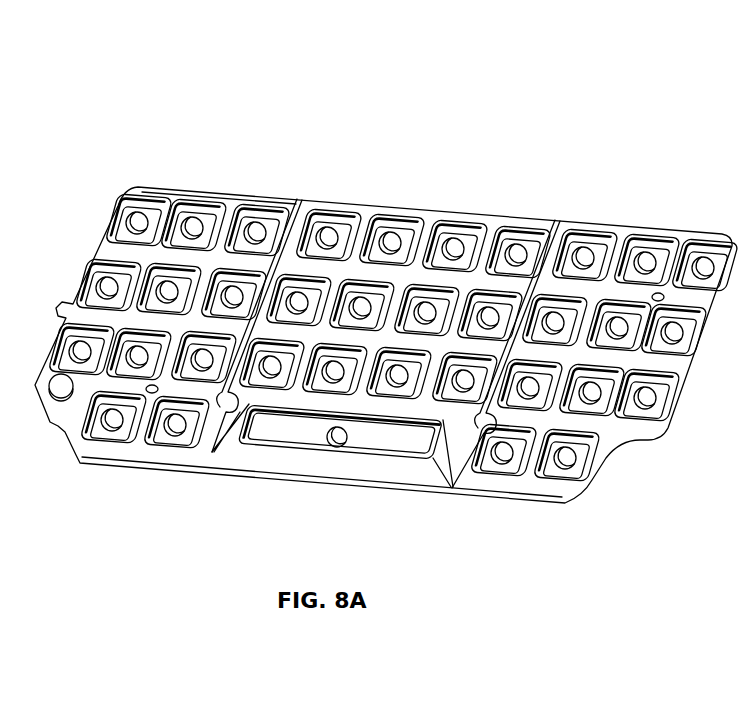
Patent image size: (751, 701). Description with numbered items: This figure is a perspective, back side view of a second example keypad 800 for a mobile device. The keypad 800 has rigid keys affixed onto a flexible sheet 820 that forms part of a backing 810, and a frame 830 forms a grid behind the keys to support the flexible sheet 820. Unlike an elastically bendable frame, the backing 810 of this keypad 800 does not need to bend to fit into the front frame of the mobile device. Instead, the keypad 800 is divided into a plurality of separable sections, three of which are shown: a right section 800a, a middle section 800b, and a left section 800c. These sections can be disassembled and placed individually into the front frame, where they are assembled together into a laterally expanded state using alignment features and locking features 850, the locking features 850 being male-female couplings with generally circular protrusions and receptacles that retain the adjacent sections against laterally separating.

The keypad 800 is at (110, 34).
The right section 800a is at (144, 183).
The middle section 800b is at (395, 206).
The left section 800c is at (605, 228).
The backing 810 is at (493, 215).
The flexible sheet 820 is at (277, 222).
The frame 830 is at (232, 207).
The locking features 850 is at (731, 598).